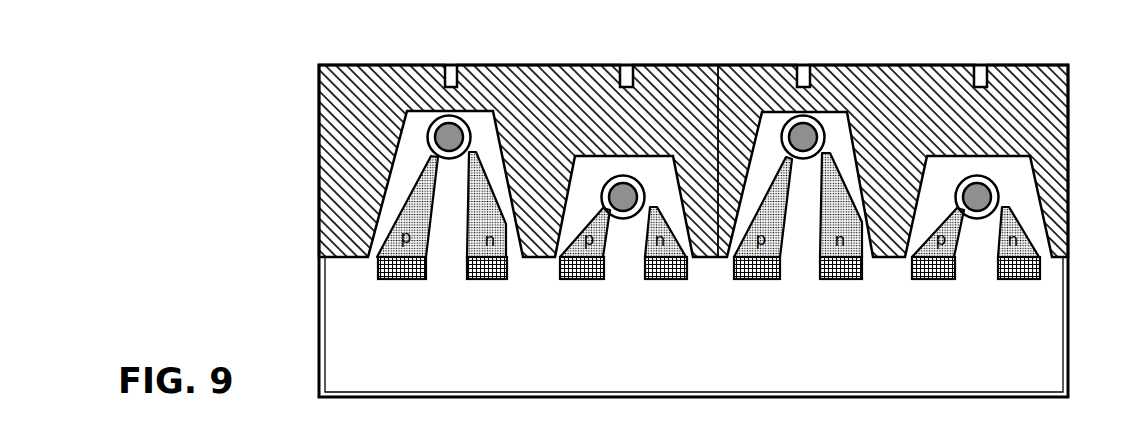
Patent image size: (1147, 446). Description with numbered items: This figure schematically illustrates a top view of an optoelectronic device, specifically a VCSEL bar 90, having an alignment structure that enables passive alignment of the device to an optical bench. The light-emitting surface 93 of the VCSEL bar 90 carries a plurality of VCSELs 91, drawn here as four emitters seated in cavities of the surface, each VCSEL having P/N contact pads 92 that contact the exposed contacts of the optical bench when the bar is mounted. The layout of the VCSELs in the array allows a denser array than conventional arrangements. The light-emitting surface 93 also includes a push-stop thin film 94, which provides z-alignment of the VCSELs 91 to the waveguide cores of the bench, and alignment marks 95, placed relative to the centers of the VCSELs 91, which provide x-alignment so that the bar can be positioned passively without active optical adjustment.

The VCSEL bar 90 is at (303, 298).
The VCSELs 91 is at (998, 181).
The P/N contact pads 92 is at (958, 283).
The light-emitting surface 93 is at (762, 340).
The push-stop thin film 94 is at (1053, 100).
The alignment marks 95 is at (808, 63).